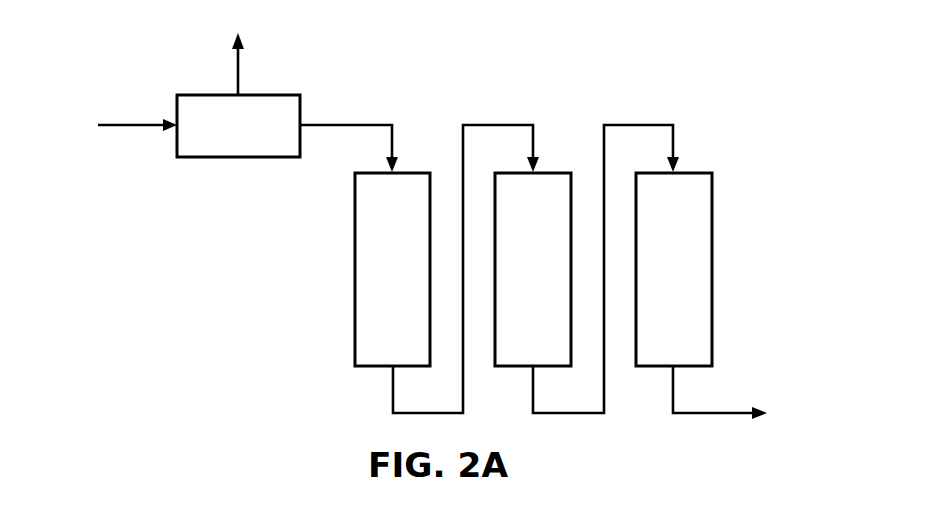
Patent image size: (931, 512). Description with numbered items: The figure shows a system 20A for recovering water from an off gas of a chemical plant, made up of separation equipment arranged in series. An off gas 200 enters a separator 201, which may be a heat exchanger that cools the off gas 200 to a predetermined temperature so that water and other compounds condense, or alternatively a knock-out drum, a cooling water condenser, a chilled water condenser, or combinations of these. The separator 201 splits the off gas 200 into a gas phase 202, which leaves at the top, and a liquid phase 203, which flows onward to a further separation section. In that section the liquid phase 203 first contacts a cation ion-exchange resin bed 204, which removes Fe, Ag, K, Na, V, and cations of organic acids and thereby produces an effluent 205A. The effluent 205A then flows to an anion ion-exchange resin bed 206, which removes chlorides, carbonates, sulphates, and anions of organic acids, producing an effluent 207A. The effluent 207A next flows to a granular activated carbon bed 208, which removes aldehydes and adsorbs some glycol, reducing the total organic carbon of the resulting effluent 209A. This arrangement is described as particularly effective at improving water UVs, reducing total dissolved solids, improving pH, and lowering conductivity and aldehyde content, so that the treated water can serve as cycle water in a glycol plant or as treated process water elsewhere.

The system 20A is at (649, 60).
The off gas 200 is at (135, 127).
The separator 201 is at (221, 138).
The gas phase 202 is at (238, 67).
The liquid phase 203 is at (350, 123).
The cation ion-exchange resin bed 204 is at (375, 294).
The effluent 205A is at (393, 390).
The anion ion-exchange resin bed 206 is at (516, 294).
The effluent 207A is at (580, 413).
The granular activated carbon bed 208 is at (656, 294).
The effluent 209A is at (717, 413).